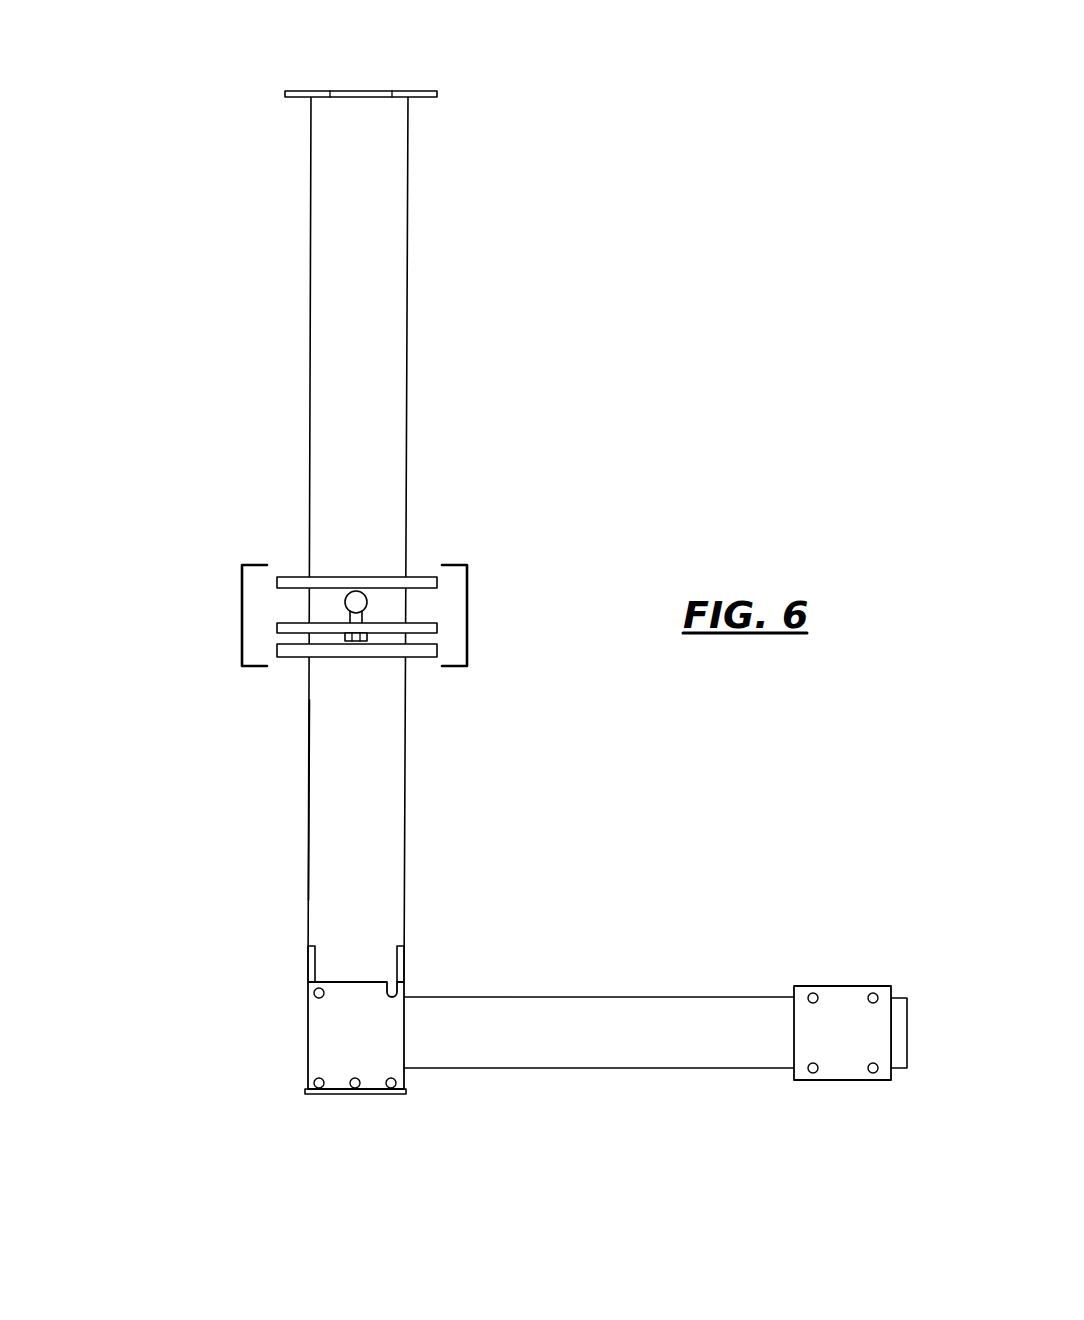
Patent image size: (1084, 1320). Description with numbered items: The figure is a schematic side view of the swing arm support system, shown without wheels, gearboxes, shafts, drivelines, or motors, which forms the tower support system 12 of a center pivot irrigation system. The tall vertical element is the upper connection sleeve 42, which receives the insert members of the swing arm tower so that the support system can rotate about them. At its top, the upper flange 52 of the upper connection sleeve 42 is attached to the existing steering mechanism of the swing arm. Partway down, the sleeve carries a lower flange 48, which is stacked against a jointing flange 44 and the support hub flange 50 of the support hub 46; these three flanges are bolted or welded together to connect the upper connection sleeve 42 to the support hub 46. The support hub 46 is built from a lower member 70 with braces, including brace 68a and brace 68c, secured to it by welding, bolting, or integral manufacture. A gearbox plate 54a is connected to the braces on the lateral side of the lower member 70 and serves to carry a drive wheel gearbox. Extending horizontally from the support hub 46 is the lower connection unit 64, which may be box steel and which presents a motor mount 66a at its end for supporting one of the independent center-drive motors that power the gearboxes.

The tower support system 12 is at (515, 617).
The upper connection sleeve 42 is at (338, 287).
The jointing flange 44 is at (295, 631).
The support hub 46 is at (522, 984).
The lower flange 48 is at (422, 580).
The support hub flange 50 is at (428, 650).
The upper flange 52 is at (423, 92).
The gearbox plate 54a is at (347, 1051).
The lower connection unit 64 is at (633, 1047).
The motor mount 66a is at (836, 1032).
The brace 68a is at (402, 963).
The brace 68c is at (310, 963).
The lower member 70 is at (357, 759).